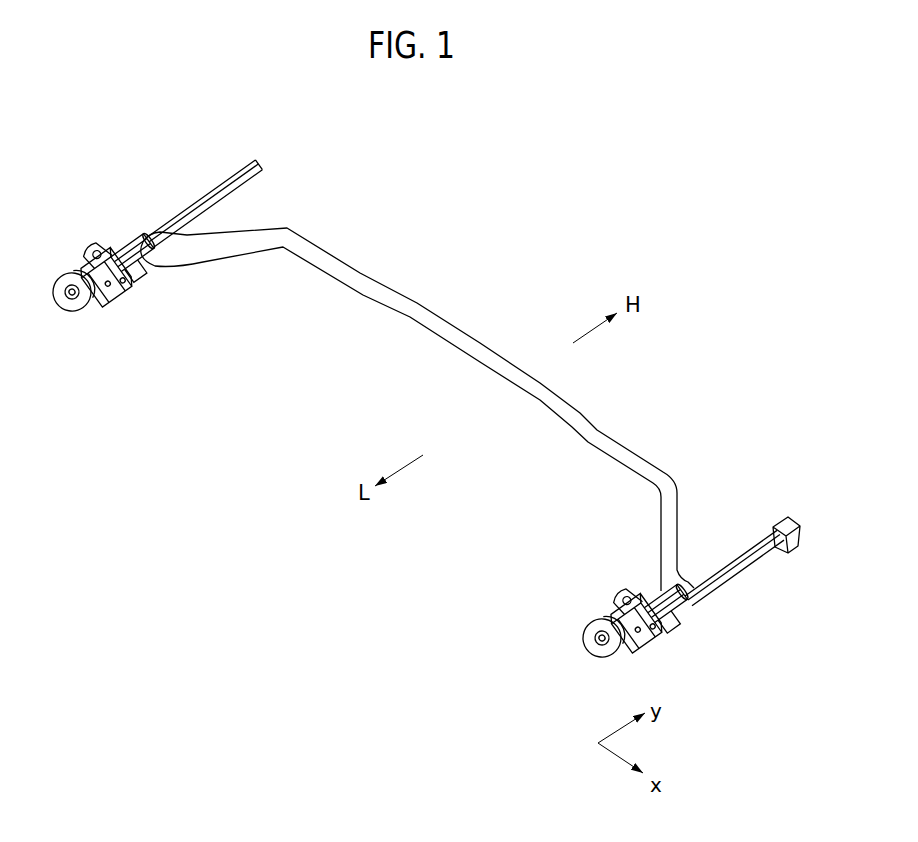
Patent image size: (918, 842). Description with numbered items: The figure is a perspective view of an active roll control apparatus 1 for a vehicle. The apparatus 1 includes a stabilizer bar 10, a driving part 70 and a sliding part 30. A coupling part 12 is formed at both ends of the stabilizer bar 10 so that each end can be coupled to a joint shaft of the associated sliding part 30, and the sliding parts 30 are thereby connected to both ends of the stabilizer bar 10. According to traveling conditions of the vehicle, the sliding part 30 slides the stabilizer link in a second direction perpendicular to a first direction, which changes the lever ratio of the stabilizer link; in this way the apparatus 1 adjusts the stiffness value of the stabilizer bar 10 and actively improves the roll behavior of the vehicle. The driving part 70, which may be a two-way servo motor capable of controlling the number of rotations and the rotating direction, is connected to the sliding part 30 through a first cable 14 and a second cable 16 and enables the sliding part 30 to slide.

The active roll control apparatus 1 is at (320, 137).
The stabilizer bar 10 is at (470, 335).
The coupling part 12 is at (150, 226).
The first cable 14 is at (183, 205).
The second cable 16 is at (168, 231).
The sliding part 30 is at (112, 320).
The driving part 70 is at (757, 507).